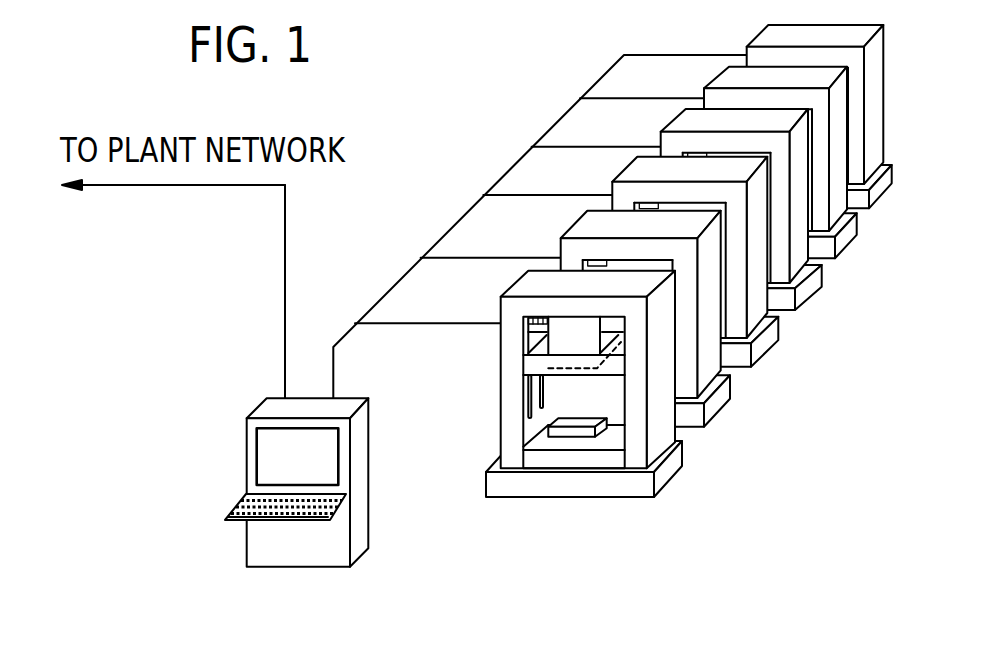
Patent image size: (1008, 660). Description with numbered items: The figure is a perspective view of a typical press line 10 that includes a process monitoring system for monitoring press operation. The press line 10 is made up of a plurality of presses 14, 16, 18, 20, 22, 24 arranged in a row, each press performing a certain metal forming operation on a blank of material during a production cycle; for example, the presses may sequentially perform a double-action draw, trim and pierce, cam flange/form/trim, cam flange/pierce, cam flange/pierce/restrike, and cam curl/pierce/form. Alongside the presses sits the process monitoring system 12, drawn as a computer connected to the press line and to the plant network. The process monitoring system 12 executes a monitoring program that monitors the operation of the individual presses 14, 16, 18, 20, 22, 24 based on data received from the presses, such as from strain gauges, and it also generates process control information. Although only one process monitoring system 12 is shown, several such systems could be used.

The press line 10 is at (463, 110).
The process monitoring system 12 is at (358, 542).
The press 14 is at (662, 475).
The press 16 is at (712, 410).
The press 18 is at (763, 345).
The press 20 is at (802, 292).
The press 22 is at (842, 240).
The press 24 is at (877, 193).